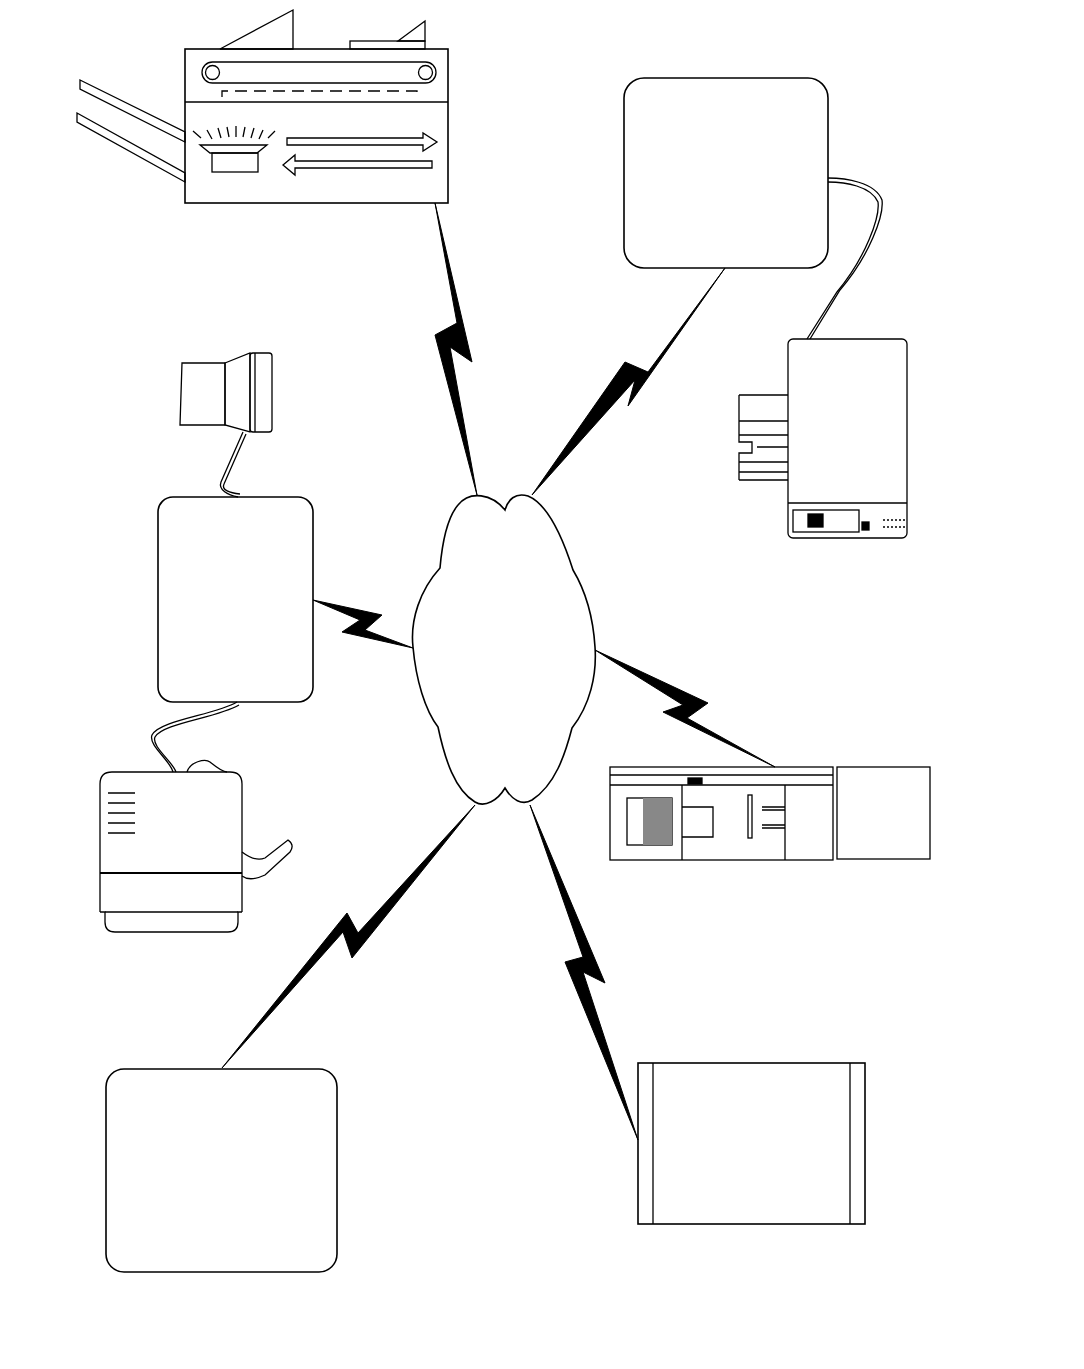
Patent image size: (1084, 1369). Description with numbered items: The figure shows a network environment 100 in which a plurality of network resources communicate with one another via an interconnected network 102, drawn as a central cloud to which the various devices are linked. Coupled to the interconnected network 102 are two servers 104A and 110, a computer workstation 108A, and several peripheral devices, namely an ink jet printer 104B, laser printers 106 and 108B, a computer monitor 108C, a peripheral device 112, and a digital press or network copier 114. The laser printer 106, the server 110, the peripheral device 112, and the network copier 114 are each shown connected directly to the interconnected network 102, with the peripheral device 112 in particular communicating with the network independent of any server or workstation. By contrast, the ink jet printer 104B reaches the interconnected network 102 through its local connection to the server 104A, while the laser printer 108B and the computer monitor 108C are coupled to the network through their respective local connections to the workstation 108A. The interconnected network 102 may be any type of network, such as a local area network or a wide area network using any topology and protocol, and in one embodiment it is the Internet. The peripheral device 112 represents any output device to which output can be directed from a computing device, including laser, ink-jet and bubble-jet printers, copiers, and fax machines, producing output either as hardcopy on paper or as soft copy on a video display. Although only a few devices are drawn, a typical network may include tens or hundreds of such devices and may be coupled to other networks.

The network environment 100 is at (487, 75).
The interconnected network 102 is at (445, 540).
The server 104A is at (725, 78).
The ink jet printer 104B is at (842, 339).
The laser printer 106 is at (277, 203).
The workstation 108A is at (158, 578).
The laser printer 108B is at (242, 800).
The computer monitor 108C is at (188, 363).
The server 110 is at (337, 1165).
The peripheral device 112 is at (865, 1140).
The digital press or network copier 114 is at (752, 860).